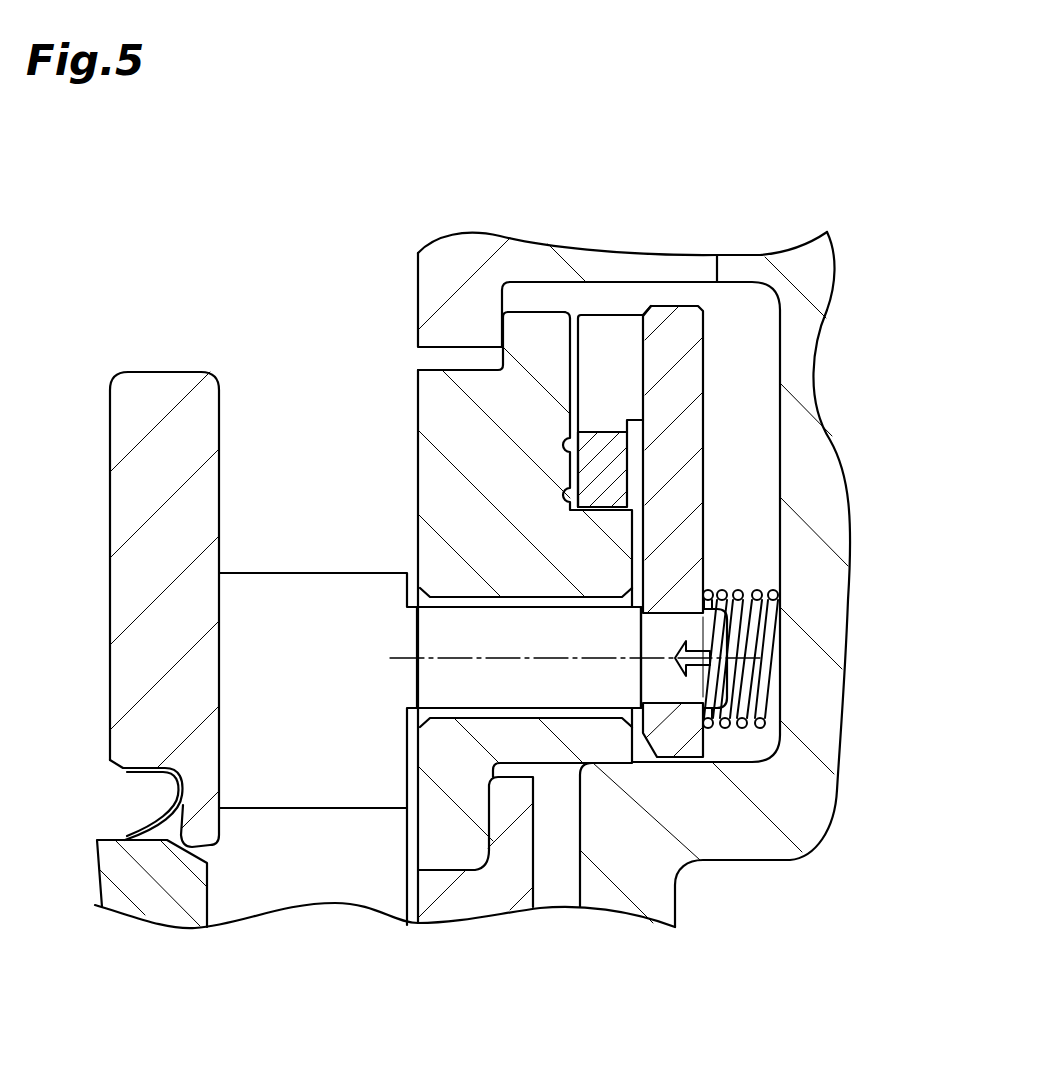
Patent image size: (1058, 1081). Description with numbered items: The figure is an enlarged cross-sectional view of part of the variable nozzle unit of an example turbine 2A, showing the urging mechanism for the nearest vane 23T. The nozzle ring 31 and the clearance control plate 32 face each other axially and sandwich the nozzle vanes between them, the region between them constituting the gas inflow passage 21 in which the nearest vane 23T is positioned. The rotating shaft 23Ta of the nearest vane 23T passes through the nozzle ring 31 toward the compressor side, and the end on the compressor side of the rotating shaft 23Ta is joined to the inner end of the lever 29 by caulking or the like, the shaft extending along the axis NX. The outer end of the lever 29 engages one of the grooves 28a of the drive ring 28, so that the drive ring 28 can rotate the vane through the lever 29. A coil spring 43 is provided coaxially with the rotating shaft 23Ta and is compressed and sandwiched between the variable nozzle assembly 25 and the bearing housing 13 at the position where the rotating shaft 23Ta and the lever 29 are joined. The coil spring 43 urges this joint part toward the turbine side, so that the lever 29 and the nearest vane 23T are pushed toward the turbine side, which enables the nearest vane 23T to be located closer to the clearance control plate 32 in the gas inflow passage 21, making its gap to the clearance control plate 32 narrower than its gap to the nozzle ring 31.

The turbine 2A is at (828, 232).
The bearing housing 13 is at (737, 848).
The gas inflow passage 21 is at (321, 506).
The nearest vane 23T is at (247, 638).
The rotating shaft 23Ta is at (545, 690).
The variable nozzle assembly 25 is at (532, 307).
The drive ring 28 is at (594, 309).
The grooves 28a is at (614, 348).
The lever 29 is at (685, 476).
The nozzle ring 31 is at (418, 412).
The clearance control plate 32 is at (155, 402).
The coil spring 43 is at (776, 623).
The axis NX is at (582, 657).